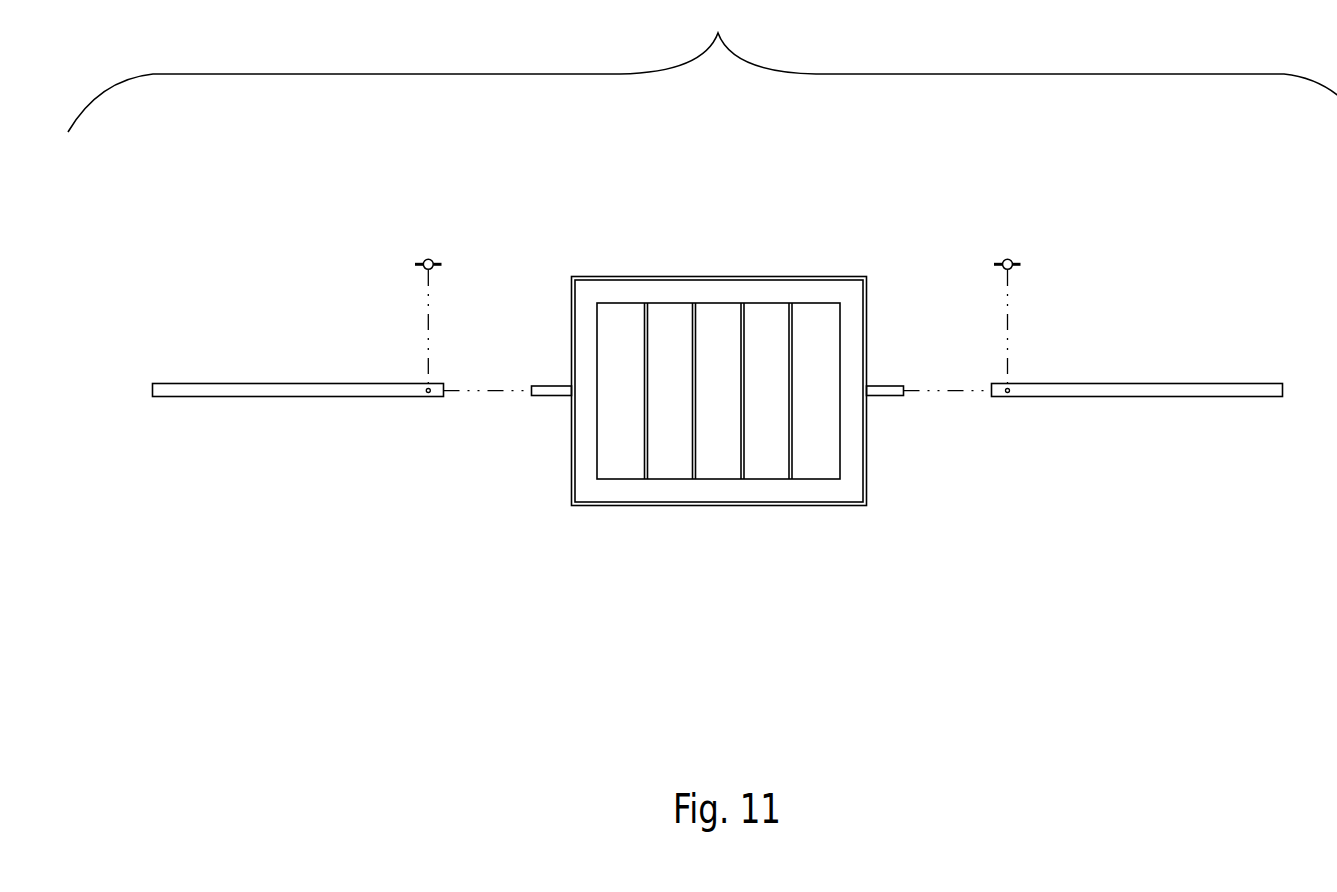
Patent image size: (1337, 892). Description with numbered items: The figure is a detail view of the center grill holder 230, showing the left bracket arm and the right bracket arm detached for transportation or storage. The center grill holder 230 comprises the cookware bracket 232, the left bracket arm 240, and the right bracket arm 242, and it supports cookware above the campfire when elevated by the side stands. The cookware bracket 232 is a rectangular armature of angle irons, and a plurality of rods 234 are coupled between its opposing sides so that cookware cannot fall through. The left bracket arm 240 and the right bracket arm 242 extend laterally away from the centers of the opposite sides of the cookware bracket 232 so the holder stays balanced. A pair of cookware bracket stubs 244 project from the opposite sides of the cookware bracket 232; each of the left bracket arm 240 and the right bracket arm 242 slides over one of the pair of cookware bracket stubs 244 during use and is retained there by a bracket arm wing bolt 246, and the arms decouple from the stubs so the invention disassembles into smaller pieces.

The center grill holder 230 is at (702, 71).
The cookware bracket 232 is at (820, 279).
The plurality of rods 234 is at (647, 335).
The left bracket arm 240 is at (217, 392).
The right bracket arm 242 is at (1230, 392).
The pair of cookware bracket stubs 244 is at (551, 392).
The bracket arm wing bolt 246 is at (436, 260).